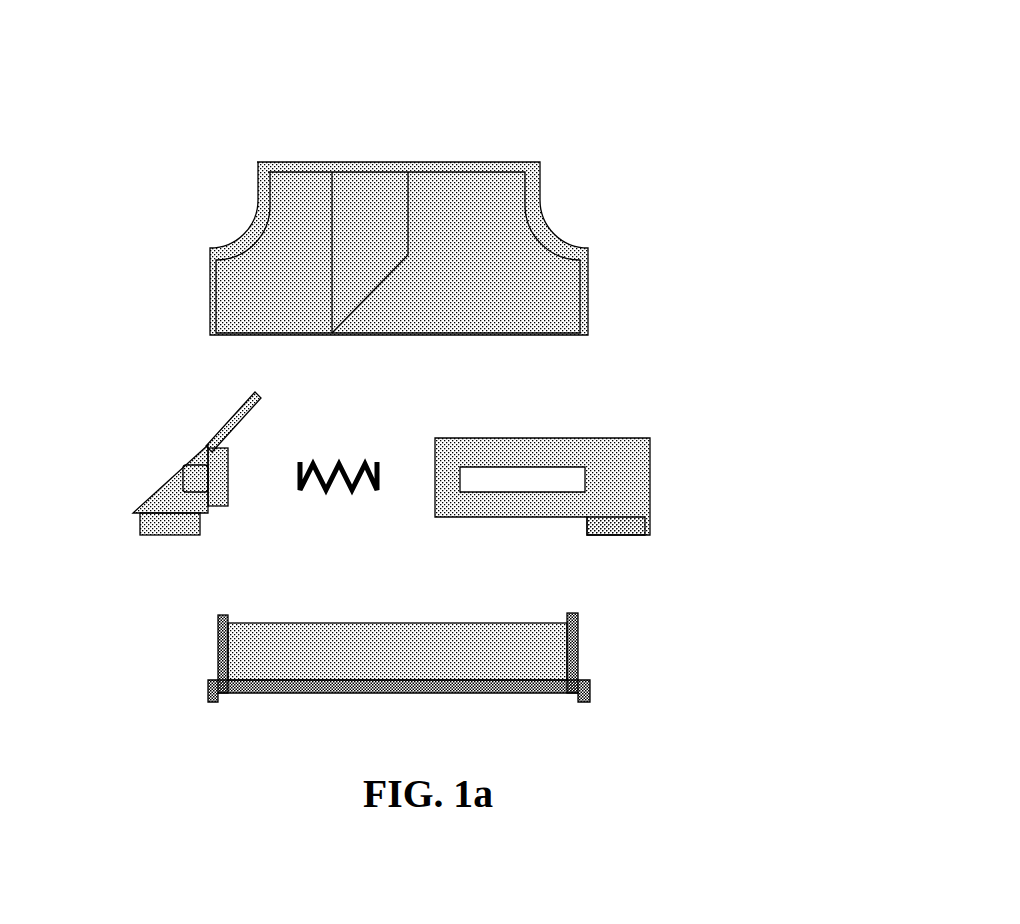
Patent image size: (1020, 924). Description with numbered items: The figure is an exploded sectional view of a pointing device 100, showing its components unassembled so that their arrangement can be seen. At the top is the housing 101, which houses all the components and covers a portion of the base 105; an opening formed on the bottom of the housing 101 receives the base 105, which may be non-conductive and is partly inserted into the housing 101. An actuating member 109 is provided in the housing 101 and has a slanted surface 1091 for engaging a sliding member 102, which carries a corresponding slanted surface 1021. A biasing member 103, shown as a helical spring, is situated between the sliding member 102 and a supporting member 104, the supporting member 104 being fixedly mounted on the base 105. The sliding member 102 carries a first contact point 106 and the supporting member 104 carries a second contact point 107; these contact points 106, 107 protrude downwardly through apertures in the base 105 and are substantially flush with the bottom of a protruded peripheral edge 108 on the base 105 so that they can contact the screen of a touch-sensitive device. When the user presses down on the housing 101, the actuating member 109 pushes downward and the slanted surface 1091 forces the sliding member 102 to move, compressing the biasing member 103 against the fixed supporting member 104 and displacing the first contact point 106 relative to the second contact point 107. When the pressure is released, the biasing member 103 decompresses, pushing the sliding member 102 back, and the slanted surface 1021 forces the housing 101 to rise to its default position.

The pointing device 100 is at (601, 101).
The housing 101 is at (369, 227).
The actuating member 109 is at (396, 227).
The slanted surface 1091 is at (382, 282).
The sliding member 102 is at (165, 478).
The slanted surface 1021 is at (227, 418).
The first contact point 106 is at (175, 533).
The biasing member 103 is at (337, 445).
The supporting member 104 is at (617, 482).
The second contact point 107 is at (625, 533).
The base 105 is at (493, 690).
The protruded peripheral edge 108 is at (585, 698).